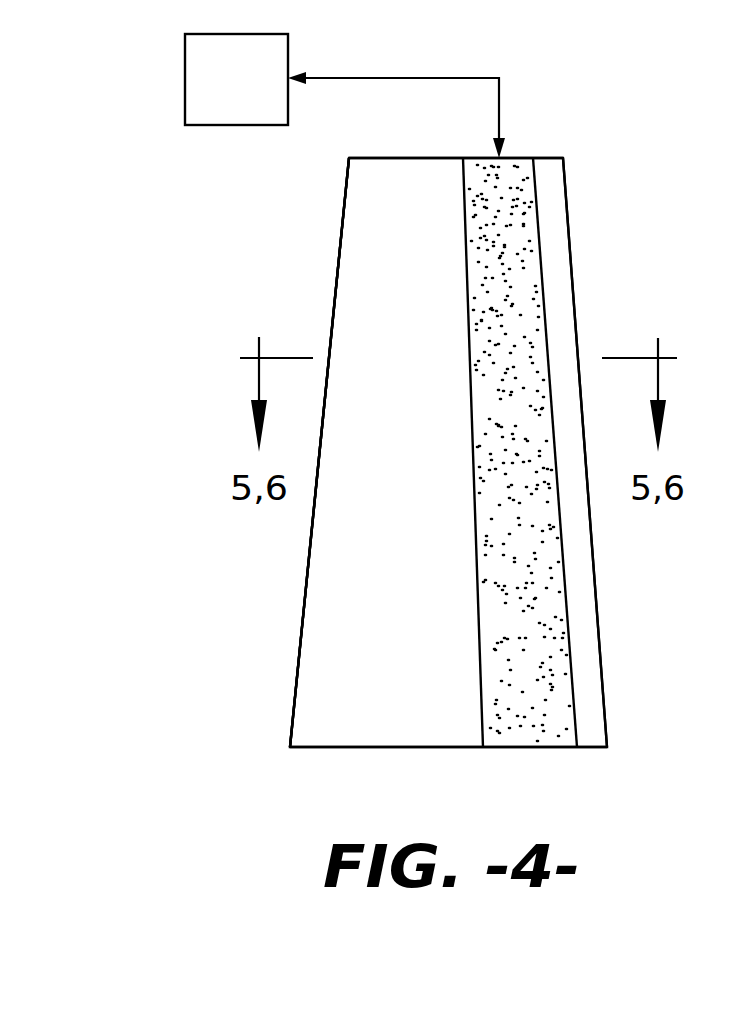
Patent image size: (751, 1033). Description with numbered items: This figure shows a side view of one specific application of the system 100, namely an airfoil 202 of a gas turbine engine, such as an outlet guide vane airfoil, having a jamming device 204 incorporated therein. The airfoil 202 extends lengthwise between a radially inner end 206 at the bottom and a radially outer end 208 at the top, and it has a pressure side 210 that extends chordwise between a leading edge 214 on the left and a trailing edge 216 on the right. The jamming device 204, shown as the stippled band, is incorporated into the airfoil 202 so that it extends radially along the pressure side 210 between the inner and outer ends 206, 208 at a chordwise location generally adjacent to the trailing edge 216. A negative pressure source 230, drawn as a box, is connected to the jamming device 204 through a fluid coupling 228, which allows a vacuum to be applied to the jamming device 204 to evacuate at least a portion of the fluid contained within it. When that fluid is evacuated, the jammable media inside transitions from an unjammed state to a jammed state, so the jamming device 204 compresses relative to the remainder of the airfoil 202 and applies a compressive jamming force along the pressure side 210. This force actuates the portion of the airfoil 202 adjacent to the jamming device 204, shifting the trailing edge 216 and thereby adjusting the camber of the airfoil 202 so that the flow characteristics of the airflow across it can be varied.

The system 100 is at (499, 411).
The airfoil 202 is at (292, 287).
The jamming device 204 is at (522, 280).
The radially inner end 206 is at (330, 749).
The radially outer end 208 is at (412, 157).
The pressure side 210 is at (330, 653).
The leading edge 214 is at (307, 582).
The trailing edge 216 is at (600, 647).
The fluid coupling 228 is at (435, 77).
The negative pressure source 230 is at (263, 96).